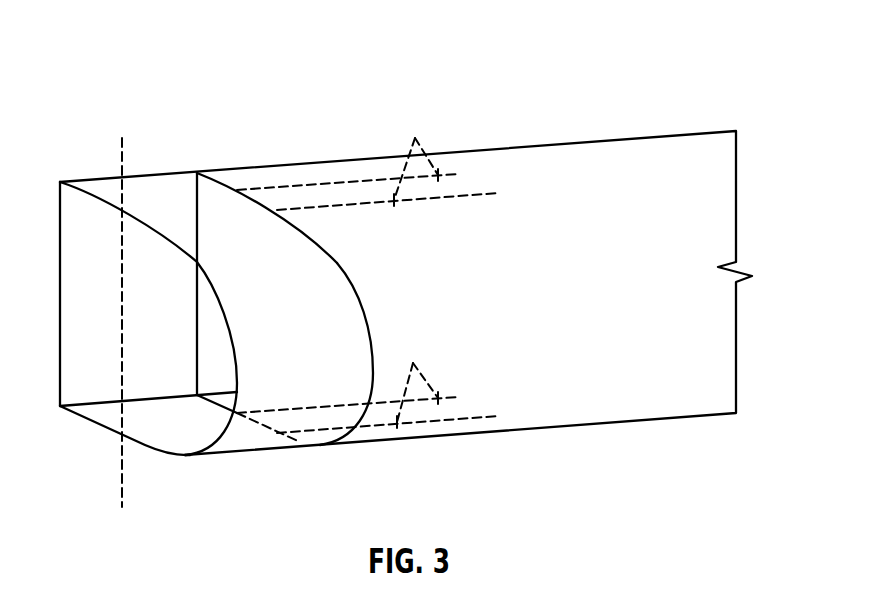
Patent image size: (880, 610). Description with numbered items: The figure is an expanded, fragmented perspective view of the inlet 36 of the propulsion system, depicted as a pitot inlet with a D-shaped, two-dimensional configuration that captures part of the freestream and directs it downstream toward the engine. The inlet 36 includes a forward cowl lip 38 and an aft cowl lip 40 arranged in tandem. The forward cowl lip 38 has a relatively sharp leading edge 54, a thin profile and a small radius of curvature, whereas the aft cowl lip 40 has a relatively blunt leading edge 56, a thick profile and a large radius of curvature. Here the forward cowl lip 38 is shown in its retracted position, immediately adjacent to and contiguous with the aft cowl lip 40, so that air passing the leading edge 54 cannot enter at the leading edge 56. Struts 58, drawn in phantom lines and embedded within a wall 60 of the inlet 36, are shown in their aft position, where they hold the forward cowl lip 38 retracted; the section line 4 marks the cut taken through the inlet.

The inlet 36 is at (505, 79).
The forward cowl lip 38 is at (98, 190).
The leading edge 54 is at (108, 207).
The leading edge 56 is at (258, 200).
The aft cowl lip 40 is at (378, 263).
The wall 60 is at (372, 170).
The struts 58 is at (415, 136).
The section line 4- 4 is at (122, 138).